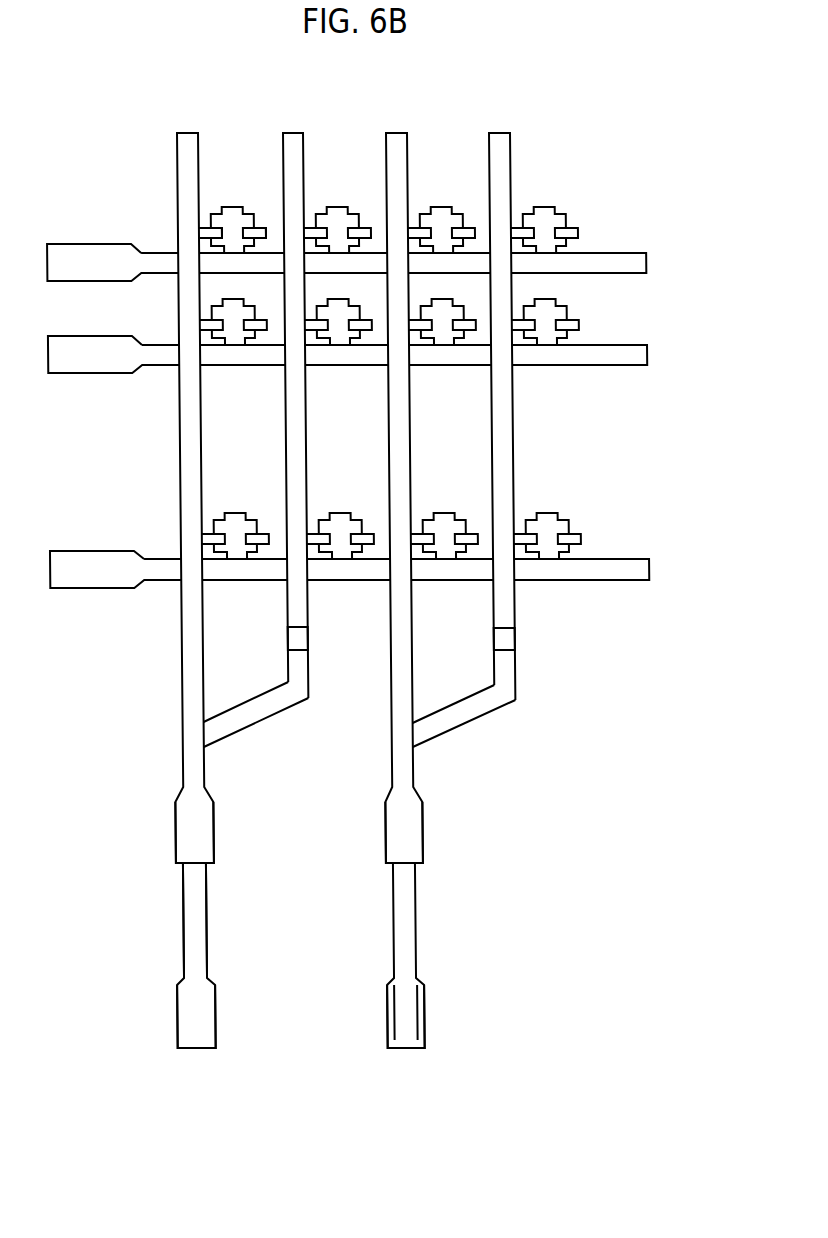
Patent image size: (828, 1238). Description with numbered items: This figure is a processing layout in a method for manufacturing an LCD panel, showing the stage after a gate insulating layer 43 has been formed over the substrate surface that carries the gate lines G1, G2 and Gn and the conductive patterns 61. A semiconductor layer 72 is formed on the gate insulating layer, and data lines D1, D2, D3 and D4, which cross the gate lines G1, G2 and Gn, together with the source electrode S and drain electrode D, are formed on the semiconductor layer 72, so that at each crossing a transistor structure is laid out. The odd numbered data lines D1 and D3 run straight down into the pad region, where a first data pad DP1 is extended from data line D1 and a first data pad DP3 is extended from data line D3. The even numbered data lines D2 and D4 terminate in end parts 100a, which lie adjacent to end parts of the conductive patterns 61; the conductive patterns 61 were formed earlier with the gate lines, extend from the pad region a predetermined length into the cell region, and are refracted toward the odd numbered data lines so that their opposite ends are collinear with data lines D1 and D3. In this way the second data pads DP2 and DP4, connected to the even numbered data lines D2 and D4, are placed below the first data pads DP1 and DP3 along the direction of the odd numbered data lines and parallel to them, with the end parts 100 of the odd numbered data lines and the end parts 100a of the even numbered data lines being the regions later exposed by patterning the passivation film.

The semiconductor layer 72 is at (231, 204).
The source electrode S is at (206, 227).
The drain electrode D is at (262, 227).
The data line D1 is at (187, 143).
The data line D2 is at (293, 143).
The data line D3 is at (396, 143).
The data line D4 is at (499, 143).
The gate line G1 is at (633, 264).
The gate line G2 is at (631, 356).
The gate line Gn is at (636, 571).
The end parts of even numbered data lines 100a is at (285, 650).
The conductive pattern 61 is at (241, 717).
The data pad DP1 is at (207, 830).
The data pad DP2 is at (207, 1017).
The data pad DP3 is at (416, 830).
The data pad DP4 is at (416, 1017).
The end parts of odd numbered data lines 100 is at (190, 867).
The gate insulating layer 43 is at (406, 1012).